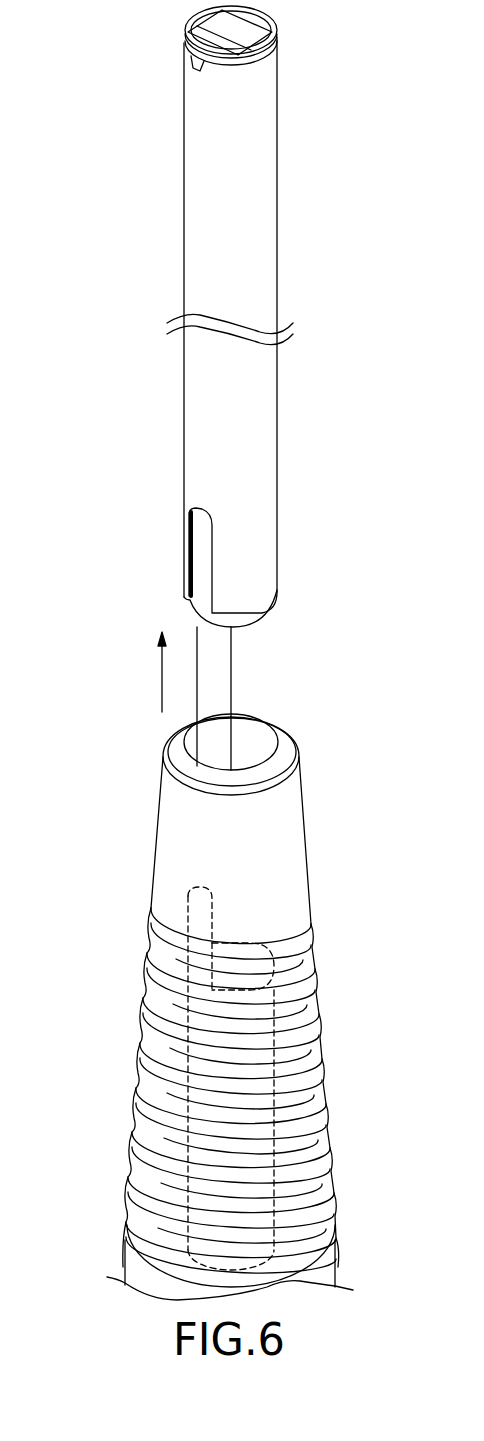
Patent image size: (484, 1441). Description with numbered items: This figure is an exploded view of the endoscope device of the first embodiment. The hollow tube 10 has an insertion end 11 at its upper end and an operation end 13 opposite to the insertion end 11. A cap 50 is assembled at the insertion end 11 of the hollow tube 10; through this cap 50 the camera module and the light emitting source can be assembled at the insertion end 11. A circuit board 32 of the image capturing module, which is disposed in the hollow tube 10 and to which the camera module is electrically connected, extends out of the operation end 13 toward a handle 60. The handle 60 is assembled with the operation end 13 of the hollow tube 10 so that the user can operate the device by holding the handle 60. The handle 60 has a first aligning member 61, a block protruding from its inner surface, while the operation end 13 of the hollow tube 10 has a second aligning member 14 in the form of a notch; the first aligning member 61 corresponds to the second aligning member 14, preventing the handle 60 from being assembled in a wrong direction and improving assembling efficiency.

The hollow tube 10 is at (265, 190).
The insertion end 11 is at (275, 67).
The operation end 13 is at (265, 575).
The second aligning member 14 is at (202, 537).
The circuit board 32 is at (218, 679).
The cap 50 is at (260, 25).
The handle 60 is at (190, 828).
The first aligning member 61 is at (187, 902).